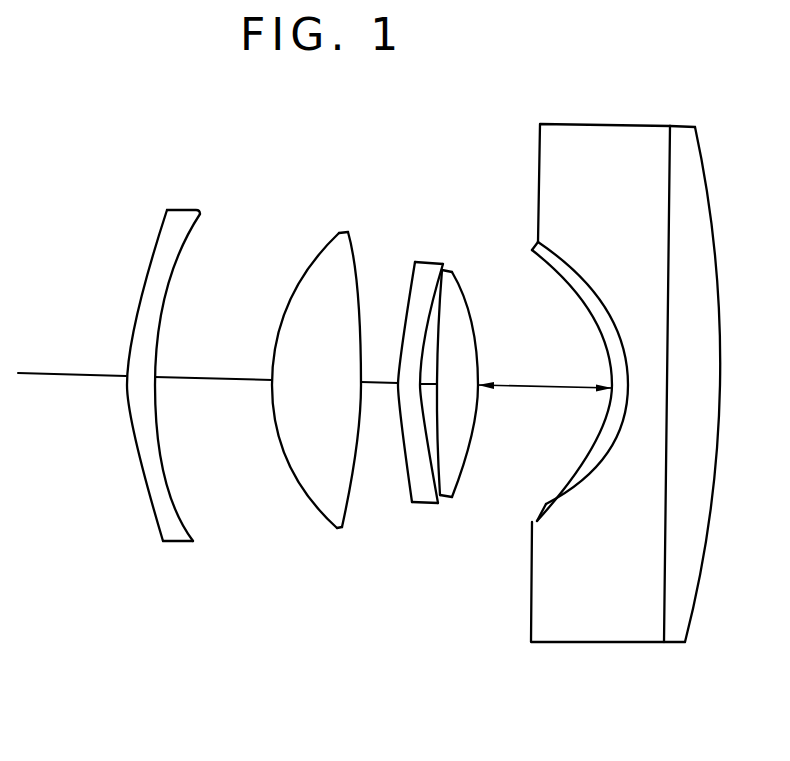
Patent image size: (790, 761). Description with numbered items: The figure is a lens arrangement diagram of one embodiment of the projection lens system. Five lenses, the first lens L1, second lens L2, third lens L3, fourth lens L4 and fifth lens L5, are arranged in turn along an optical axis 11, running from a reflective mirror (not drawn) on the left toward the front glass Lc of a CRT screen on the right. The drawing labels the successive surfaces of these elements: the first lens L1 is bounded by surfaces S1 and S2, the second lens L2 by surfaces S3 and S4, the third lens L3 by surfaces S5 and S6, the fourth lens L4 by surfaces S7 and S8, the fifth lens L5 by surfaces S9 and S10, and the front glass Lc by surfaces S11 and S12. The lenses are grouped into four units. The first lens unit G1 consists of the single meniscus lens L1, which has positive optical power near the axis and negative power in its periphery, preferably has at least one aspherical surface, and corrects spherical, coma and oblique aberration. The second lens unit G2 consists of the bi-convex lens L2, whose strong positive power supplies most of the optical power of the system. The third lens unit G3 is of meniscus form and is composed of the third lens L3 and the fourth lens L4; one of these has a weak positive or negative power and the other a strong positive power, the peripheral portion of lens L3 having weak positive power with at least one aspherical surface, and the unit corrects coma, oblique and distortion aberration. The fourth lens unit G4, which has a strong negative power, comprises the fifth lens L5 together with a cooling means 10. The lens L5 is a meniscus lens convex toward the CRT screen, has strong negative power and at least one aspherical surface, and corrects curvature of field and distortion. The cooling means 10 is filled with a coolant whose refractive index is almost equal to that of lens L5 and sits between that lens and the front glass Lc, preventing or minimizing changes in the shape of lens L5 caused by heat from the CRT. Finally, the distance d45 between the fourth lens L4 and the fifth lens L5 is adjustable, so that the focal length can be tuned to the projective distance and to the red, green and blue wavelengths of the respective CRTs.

The cooling means 10 is at (590, 124).
The optical axis 11 is at (66, 375).
The first lens L1 is at (179, 405).
The second lens L2 is at (322, 405).
The third lens L3 is at (417, 405).
The fourth lens L4 is at (487, 405).
The fifth lens L5 is at (557, 405).
The front glass Lc is at (694, 360).
The first surface (front surface of L1) S1 is at (157, 523).
The second surface (rear surface of L1) S2 is at (197, 455).
The third surface (front surface of L2) S3 is at (322, 515).
The fourth surface (rear surface of L2) S4 is at (352, 464).
The fifth surface (front surface of L3) S5 is at (406, 488).
The sixth surface (rear surface of L3) S6 is at (423, 502).
The seventh surface (front surface of L4) S7 is at (462, 483).
The eighth surface (rear surface of L4) S8 is at (458, 486).
The ninth surface (front surface of L5) S9 is at (545, 498).
The tenth surface (rear surface of L5) S10 is at (583, 469).
The eleventh surface (front surface of cover glass) S11 is at (663, 583).
The twelfth surface (rear surface of cover glass) S12 is at (700, 580).
The first lens unit G1 is at (179, 436).
The second lens unit G2 is at (322, 436).
The third lens unit G3 is at (457, 436).
The fourth lens unit G4 is at (585, 390).
The distance between the fourth lens and fifth lens d45 is at (545, 366).